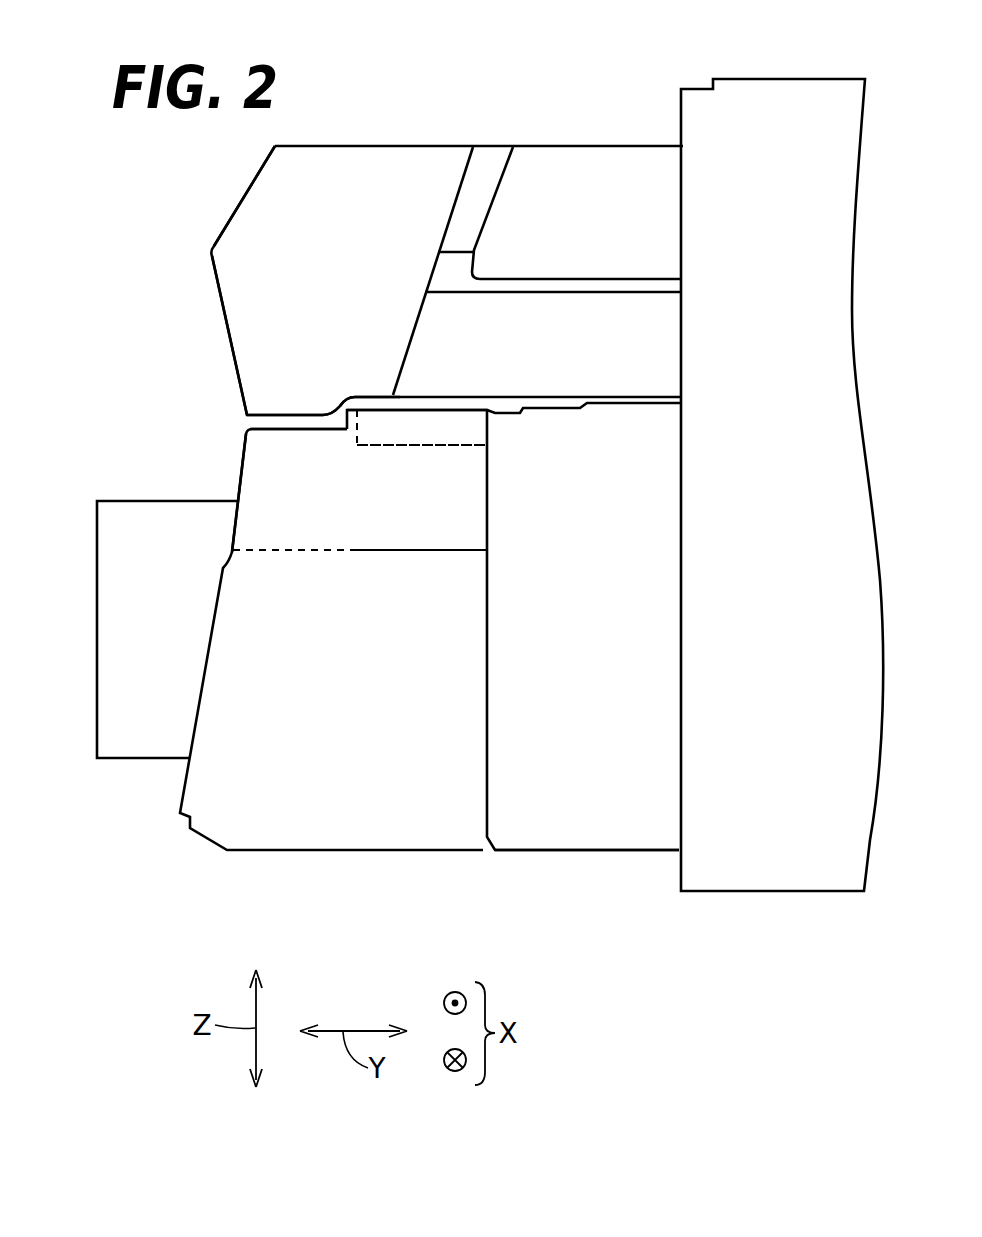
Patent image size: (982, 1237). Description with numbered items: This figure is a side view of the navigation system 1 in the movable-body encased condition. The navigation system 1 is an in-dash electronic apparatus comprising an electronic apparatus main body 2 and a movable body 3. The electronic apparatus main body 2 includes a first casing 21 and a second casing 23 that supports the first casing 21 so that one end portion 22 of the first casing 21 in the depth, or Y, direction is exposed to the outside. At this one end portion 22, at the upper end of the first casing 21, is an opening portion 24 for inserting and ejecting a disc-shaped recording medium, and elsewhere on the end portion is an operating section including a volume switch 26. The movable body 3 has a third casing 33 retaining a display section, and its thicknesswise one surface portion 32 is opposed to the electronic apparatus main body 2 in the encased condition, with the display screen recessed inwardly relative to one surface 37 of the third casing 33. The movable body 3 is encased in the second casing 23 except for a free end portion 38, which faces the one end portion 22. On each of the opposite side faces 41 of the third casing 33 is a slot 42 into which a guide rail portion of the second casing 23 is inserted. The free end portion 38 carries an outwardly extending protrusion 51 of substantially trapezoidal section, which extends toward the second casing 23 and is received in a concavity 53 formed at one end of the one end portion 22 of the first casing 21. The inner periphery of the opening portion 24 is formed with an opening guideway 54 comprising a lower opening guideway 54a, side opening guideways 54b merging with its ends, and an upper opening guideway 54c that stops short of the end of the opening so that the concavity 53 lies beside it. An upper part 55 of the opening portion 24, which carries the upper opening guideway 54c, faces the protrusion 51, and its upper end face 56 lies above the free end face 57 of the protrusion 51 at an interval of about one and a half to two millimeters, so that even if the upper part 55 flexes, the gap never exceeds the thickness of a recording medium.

The navigation system 1 is at (520, 68).
The electronic apparatus main body 2 is at (362, 835).
The movable body 3 is at (362, 158).
The first casing 21 is at (540, 840).
The one end portion 22 is at (625, 838).
The second casing 23 is at (755, 870).
The opening portion 24 is at (262, 487).
The volume switch 26 is at (120, 690).
The one surface portion 32 is at (625, 397).
The third casing 33 is at (245, 230).
The one surface 37 is at (412, 397).
The free end portion 38 is at (418, 157).
The opposite side faces 41 is at (447, 272).
The slot 42 is at (542, 288).
The protrusion 51 is at (253, 383).
The concavity 53 is at (292, 420).
The opening guideway 54 is at (292, 535).
The lower opening guideway 54a is at (333, 548).
The side opening guideway 54b is at (462, 524).
The upper opening guideway 54c is at (443, 445).
The upper part 55 is at (473, 432).
The upper end face 56 is at (377, 407).
The free end face 57 is at (267, 418).